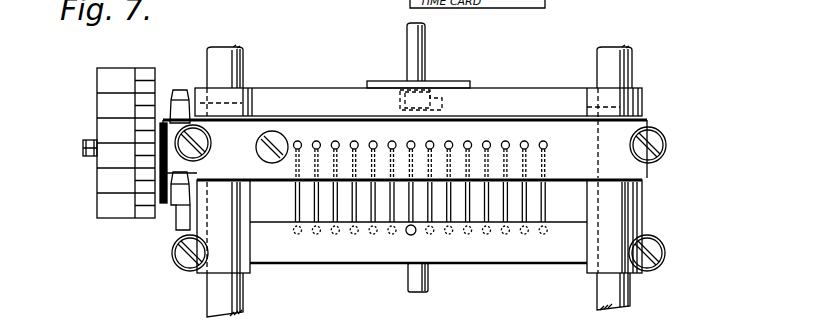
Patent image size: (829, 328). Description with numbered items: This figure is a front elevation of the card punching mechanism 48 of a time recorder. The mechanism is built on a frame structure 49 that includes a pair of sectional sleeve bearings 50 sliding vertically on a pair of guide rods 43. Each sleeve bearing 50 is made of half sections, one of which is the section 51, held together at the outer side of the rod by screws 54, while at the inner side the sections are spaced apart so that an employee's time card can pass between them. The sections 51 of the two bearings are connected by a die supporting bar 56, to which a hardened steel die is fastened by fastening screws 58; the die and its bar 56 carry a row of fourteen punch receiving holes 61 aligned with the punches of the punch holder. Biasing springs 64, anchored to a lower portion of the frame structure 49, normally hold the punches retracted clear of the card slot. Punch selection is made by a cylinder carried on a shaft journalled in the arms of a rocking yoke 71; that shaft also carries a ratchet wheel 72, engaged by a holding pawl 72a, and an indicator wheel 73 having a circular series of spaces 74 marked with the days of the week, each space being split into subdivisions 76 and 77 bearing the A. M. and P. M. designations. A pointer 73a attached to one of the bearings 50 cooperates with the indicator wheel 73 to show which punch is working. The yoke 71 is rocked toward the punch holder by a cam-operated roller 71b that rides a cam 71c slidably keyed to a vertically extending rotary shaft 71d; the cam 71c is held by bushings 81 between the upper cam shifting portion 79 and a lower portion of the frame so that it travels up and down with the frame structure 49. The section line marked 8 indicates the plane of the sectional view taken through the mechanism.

The section line 8- 8 is at (398, 52).
The guide rods 43 is at (227, 62).
The card punching mechanism 48 is at (524, 74).
The frame structure 49 is at (548, 263).
The sectional sleeve bearings 50 is at (250, 265).
The half sections 51 is at (215, 270).
The screws 54 is at (199, 139).
The die supporting bar 56 is at (538, 127).
The fastening screws 58 is at (205, 162).
The punch receiving holes 61 is at (335, 141).
The biasing springs 64 is at (318, 203).
The rocking yoke 71 is at (546, 88).
The cam-operated roller 71b is at (442, 100).
The cam 71c is at (401, 100).
The rotary shaft 71d is at (407, 34).
The ratchet wheel 72 is at (175, 90).
The holding pawl 72a is at (177, 225).
The indicator wheel 73 is at (150, 70).
The pointer 73a is at (133, 145).
The spaces 74 is at (97, 128).
The subdivision 76 is at (137, 70).
The subdivision 77 is at (97, 80).
The upper cam shifting portion 79 is at (466, 81).
The bushings 81 is at (434, 88).